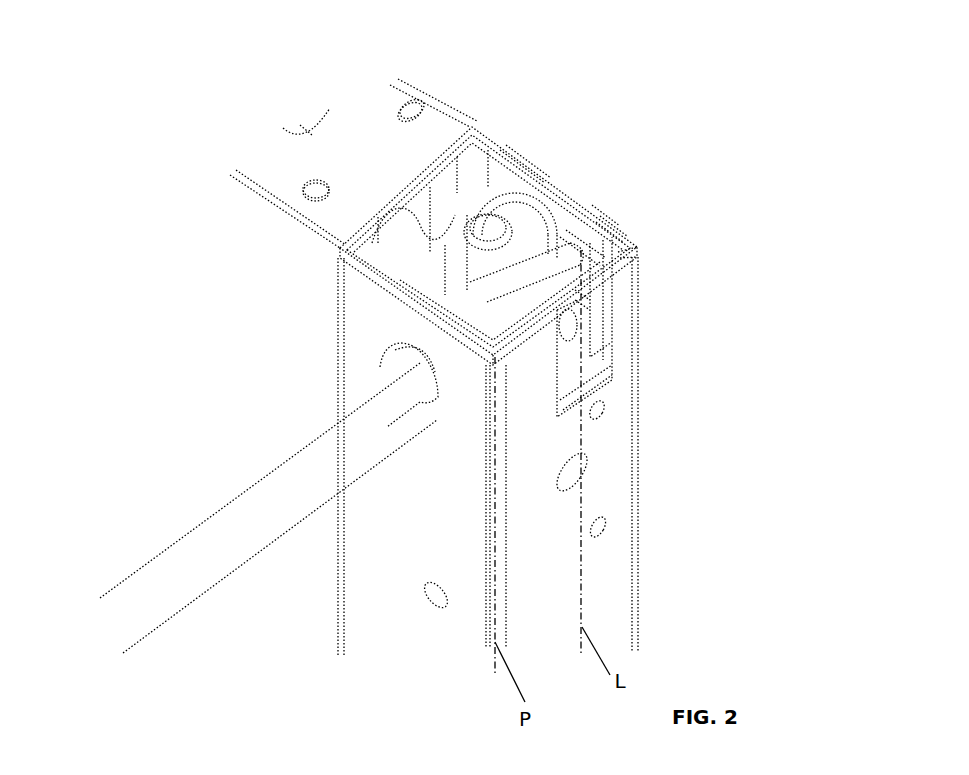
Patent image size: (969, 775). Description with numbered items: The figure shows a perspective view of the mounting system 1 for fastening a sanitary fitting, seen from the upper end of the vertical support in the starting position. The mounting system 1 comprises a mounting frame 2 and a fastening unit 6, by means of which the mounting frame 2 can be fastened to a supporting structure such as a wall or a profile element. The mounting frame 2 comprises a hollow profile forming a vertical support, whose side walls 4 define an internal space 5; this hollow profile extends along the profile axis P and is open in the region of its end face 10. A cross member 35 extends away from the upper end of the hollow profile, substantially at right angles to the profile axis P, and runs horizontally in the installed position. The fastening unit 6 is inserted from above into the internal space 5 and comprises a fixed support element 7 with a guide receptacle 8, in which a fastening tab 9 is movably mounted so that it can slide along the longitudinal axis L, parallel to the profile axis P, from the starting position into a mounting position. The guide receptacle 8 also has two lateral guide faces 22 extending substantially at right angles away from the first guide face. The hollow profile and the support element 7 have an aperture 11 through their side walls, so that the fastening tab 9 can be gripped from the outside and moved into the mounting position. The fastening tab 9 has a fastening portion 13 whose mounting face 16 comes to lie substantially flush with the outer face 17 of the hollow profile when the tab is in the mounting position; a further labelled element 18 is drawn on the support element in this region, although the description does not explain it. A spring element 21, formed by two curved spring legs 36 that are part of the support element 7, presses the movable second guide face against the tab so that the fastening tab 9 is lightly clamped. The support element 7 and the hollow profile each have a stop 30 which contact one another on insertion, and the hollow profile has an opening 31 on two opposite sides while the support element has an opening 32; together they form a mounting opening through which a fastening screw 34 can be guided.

The mounting system 1 is at (224, 228).
The mounting frame 2 is at (615, 598).
The side walls 4 is at (345, 300).
The internal space 5 is at (505, 177).
The fastening unit 6 is at (603, 237).
The support element 7 is at (602, 332).
The guide receptacle 8 is at (580, 365).
The fastening tab 9 is at (580, 297).
The end face 10 is at (538, 173).
The aperture 11 is at (595, 390).
The fastening portion 13 is at (580, 303).
The mounting face 16 is at (552, 307).
The outer face 17 is at (533, 560).
The hook 18 is at (568, 340).
The spring element 21 is at (430, 270).
The lateral guide faces 22 is at (622, 250).
The stop 30 is at (575, 412).
The opening 31 is at (557, 212).
The opening 32 is at (469, 272).
The fastening screw 34 is at (230, 532).
The cross member 35 is at (278, 157).
The spring legs 36 is at (487, 233).